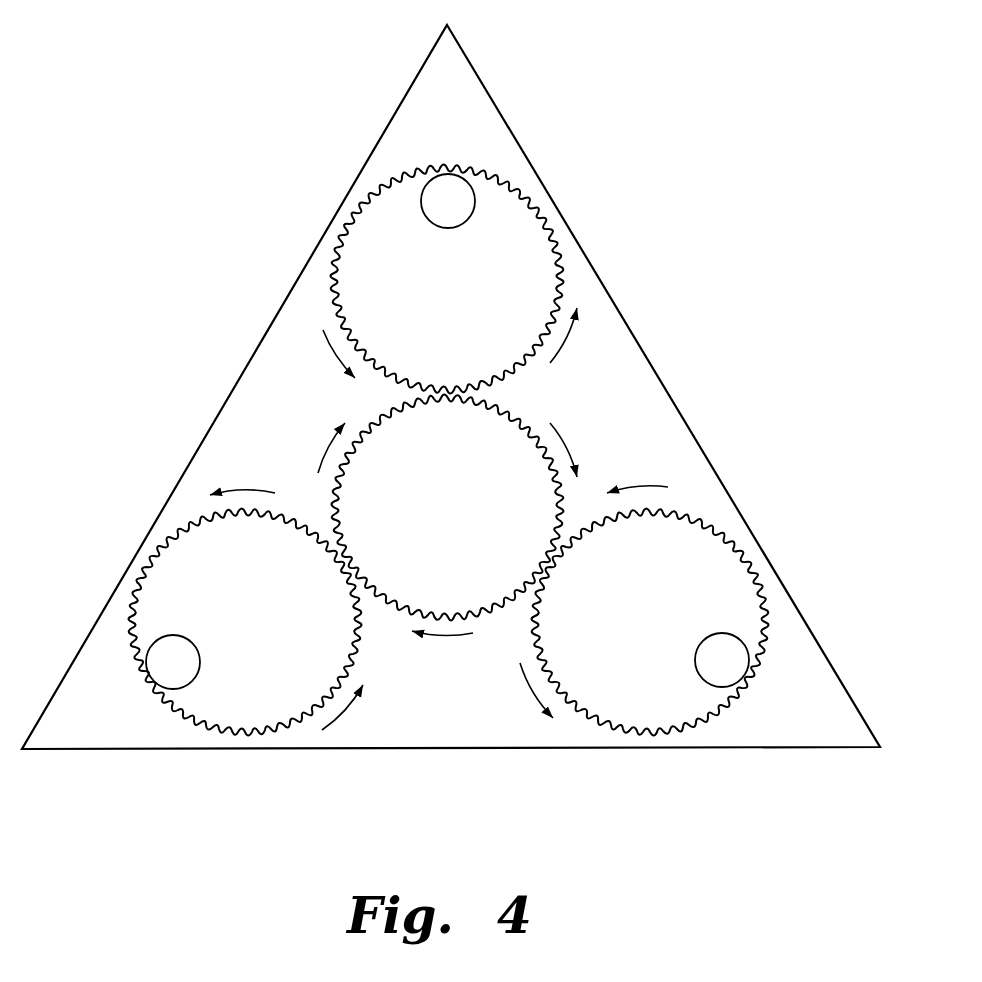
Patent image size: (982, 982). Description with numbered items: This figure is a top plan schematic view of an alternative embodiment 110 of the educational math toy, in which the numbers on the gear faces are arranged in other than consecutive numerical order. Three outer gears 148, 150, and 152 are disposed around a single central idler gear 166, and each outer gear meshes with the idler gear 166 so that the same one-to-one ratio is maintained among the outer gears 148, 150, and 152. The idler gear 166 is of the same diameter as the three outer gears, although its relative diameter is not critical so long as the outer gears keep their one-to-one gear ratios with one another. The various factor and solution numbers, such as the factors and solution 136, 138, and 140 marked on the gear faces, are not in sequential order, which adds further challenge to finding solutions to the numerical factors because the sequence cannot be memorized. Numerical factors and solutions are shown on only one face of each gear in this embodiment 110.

The educational math toy embodiment 110 is at (149, 136).
The solution number 140 is at (444, 188).
The outer gear 152 is at (358, 205).
The outer gear 148 is at (165, 535).
The outer gear 150 is at (720, 527).
The factor number 136 is at (168, 670).
The factor number 138 is at (727, 663).
The central idler gear 166 is at (420, 490).